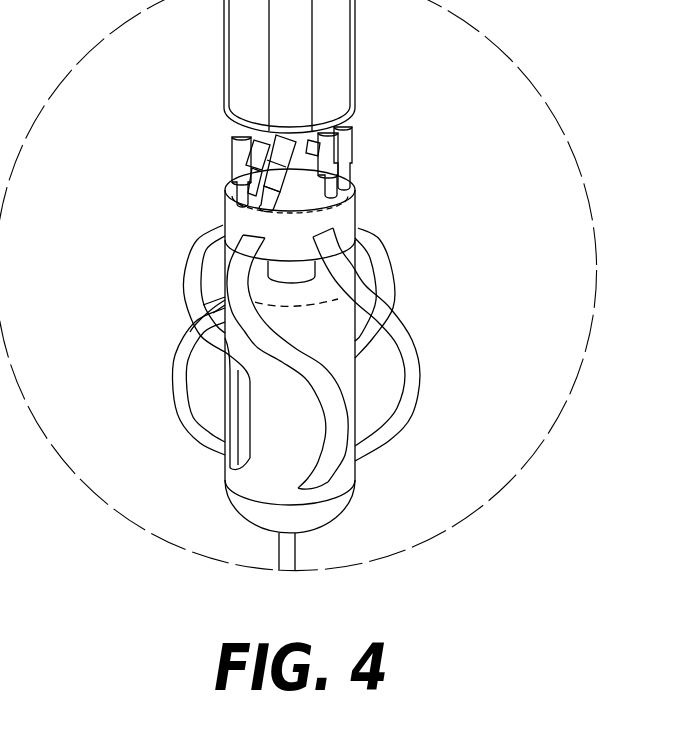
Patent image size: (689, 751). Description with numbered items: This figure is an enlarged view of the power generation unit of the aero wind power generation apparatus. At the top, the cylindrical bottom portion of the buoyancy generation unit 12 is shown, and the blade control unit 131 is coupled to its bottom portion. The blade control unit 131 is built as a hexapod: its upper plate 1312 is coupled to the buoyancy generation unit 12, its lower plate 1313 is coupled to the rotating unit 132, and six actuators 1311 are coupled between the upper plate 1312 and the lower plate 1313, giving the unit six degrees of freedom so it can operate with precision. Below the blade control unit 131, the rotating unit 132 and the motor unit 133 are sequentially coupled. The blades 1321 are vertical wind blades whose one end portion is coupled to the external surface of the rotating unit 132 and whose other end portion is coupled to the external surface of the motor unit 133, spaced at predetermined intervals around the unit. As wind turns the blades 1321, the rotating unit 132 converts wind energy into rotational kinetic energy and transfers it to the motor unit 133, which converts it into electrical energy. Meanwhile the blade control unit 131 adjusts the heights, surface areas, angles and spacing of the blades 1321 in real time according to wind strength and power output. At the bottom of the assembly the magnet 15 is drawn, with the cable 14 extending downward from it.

The buoyancy generation unit 12 is at (371, 56).
The blade control unit 131 is at (365, 151).
The actuator 1311 is at (356, 150).
The upper plate 1312 is at (357, 111).
The lower plate 1313 is at (355, 183).
The rotating unit 132 is at (357, 210).
The blades 1321 is at (413, 367).
The motor unit 133 is at (226, 457).
The magnet 15 is at (233, 504).
The cable 14 is at (295, 552).